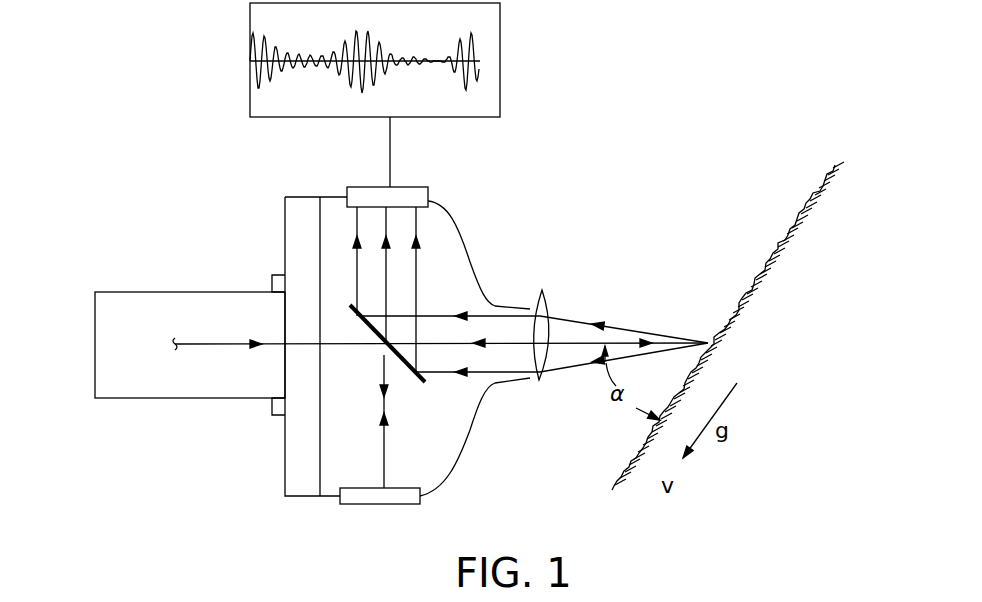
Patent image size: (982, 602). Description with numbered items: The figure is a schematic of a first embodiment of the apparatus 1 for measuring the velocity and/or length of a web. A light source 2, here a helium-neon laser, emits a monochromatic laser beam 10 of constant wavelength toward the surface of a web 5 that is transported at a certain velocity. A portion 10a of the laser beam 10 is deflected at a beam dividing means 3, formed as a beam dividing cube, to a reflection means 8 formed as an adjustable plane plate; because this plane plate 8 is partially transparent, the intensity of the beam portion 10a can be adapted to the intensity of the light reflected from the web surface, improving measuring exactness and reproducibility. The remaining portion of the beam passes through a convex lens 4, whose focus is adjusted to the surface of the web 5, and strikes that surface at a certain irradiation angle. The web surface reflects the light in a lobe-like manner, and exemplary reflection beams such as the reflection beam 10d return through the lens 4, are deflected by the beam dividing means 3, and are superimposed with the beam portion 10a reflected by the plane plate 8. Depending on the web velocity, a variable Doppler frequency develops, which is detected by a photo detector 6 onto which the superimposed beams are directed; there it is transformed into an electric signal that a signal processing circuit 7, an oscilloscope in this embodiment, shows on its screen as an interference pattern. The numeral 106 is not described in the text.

The apparatus for measuring the velocity and/or length of a web 1 is at (138, 165).
The light source 2 is at (105, 352).
The beam dividing means 3 is at (408, 382).
The convex lens 4 is at (548, 300).
The web 5 is at (765, 265).
The photo detector 6 is at (418, 202).
The signal processing circuit 7 is at (490, 97).
The reflection means 8 is at (358, 498).
The laser beam 10 is at (232, 344).
The portion of the light beam 10a is at (608, 322).
The reflection beam 10d is at (561, 381).
The beam path section 106 is at (482, 343).